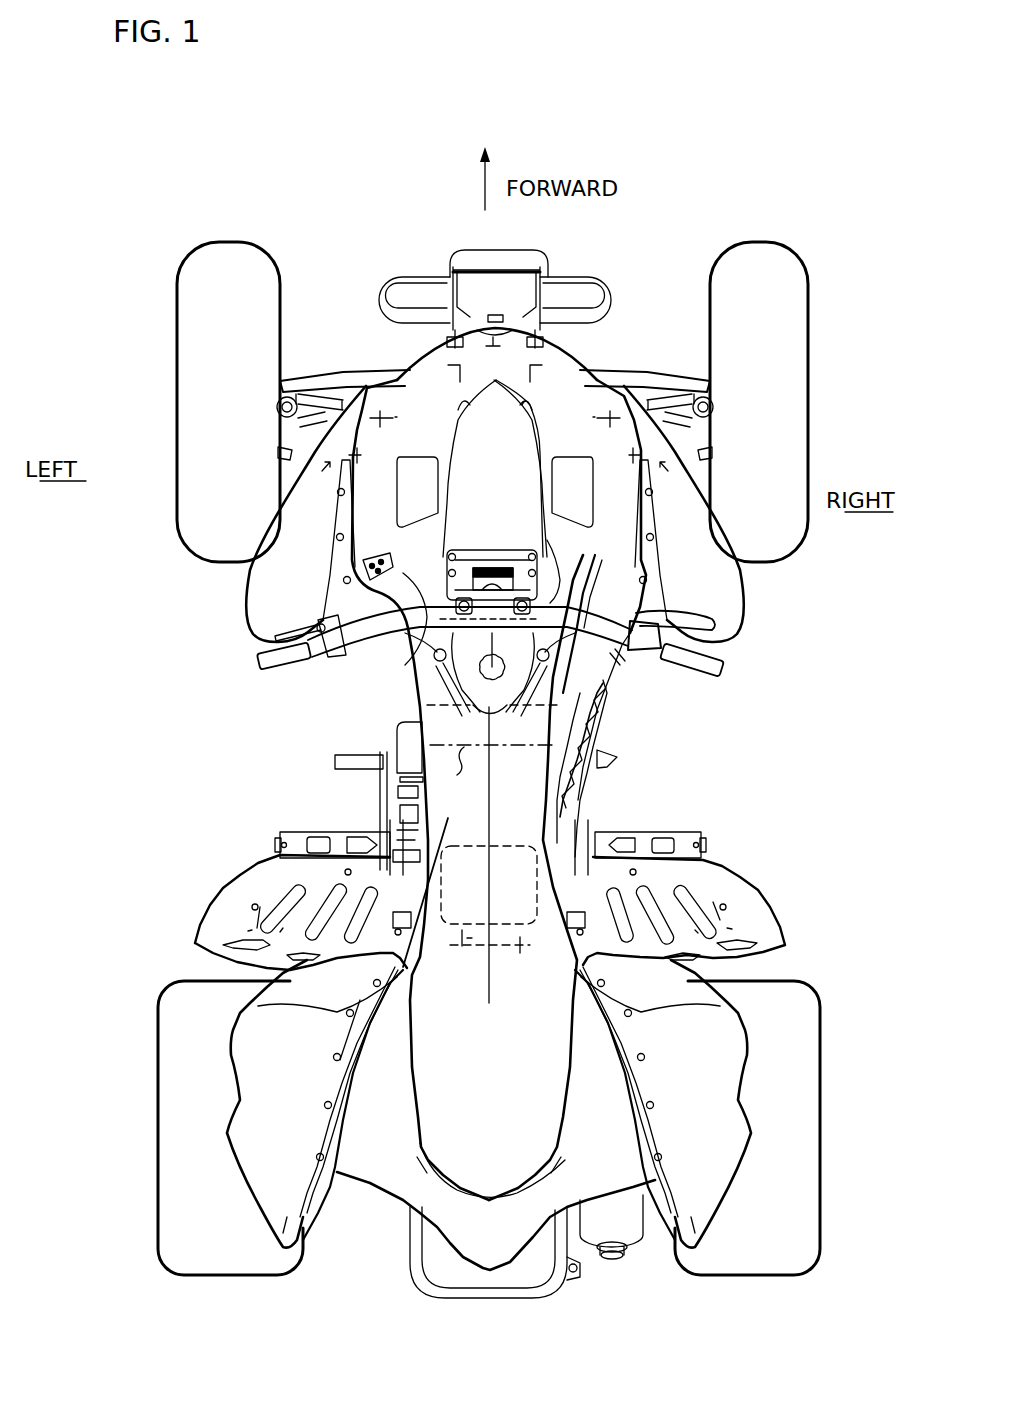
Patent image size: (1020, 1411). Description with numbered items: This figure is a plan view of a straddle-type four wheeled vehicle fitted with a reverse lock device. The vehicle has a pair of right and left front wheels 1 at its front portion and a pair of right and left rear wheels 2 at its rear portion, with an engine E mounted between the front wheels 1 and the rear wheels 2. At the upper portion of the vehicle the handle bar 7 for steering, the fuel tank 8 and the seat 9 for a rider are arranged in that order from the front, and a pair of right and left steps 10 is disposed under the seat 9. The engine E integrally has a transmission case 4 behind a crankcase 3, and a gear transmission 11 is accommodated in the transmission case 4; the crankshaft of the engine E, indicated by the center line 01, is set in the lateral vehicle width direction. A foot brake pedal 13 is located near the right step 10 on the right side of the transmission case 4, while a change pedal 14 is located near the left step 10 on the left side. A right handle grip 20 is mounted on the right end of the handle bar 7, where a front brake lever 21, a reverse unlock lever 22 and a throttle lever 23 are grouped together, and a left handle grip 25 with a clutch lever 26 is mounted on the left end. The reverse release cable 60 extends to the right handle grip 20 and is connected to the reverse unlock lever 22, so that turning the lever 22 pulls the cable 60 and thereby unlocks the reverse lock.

The front wheels 1 is at (182, 265).
The rear wheels 2 is at (158, 1108).
The crankcase 3 is at (390, 800).
The transmission case 4 is at (520, 947).
The handle bar 7 is at (560, 575).
The fuel tank 8 is at (452, 696).
The seat 9 is at (262, 1006).
The steps 10 is at (292, 880).
The gear transmission 11 is at (463, 953).
The foot brake pedal 13 is at (610, 763).
The change pedal 14 is at (335, 760).
The right handle grip 20 is at (722, 670).
The front brake lever 21 is at (700, 597).
The reverse unlock lever 22 is at (622, 675).
The throttle lever 23 is at (667, 667).
The left handle grip 25 is at (262, 666).
The clutch lever 26 is at (303, 640).
The reverse release cable 60 is at (605, 683).
The engine E is at (398, 745).
The center line of crankshaft 01 is at (465, 777).